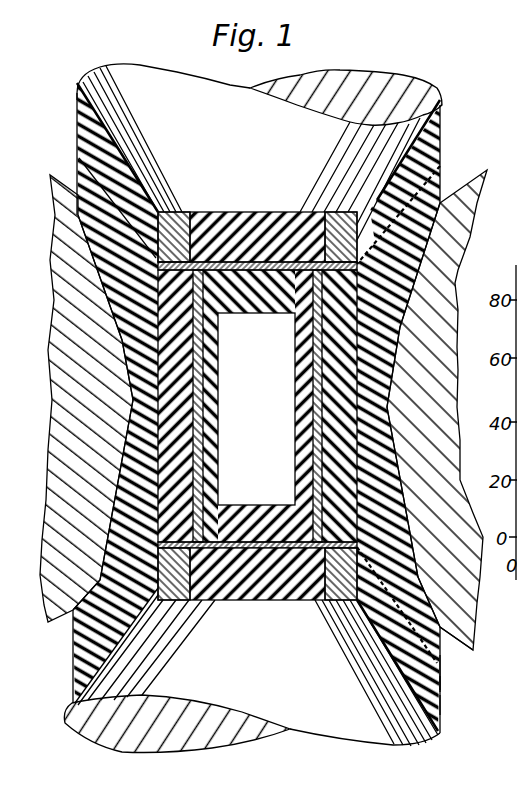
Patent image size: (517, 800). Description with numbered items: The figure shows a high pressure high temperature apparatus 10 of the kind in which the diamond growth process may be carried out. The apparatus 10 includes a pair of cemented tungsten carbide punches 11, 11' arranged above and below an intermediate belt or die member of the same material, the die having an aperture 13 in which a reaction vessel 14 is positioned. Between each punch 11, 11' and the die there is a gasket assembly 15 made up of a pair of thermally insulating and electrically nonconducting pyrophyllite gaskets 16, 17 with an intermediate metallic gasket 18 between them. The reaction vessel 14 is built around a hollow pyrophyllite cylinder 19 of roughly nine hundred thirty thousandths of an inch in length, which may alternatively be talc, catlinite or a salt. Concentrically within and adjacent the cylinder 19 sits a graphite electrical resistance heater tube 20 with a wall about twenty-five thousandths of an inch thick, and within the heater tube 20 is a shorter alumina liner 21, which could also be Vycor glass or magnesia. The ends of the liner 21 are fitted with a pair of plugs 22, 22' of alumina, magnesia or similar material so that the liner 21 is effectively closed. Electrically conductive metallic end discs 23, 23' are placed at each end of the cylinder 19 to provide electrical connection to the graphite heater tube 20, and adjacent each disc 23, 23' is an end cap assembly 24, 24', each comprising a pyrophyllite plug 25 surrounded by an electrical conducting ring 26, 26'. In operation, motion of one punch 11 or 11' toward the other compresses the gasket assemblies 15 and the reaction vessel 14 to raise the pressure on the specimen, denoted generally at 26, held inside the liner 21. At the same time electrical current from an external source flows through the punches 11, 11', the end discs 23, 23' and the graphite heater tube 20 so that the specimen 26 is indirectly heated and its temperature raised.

The apparatus 10 is at (426, 67).
The cemented tungsten carbide punch 11 is at (259, 79).
The cemented tungsten carbide punch 11' is at (252, 733).
The aperture 13 is at (500, 207).
The reaction vessel 14 is at (132, 470).
The gasket assembly 15 is at (452, 693).
The pyrophyllite gasket 16 is at (440, 697).
The pyrophyllite gasket 17 is at (440, 650).
The metallic gasket 18 is at (442, 667).
The hollow pyrophyllite cylinder 19 is at (172, 318).
The graphite electrical resistance heater tube 20 is at (166, 400).
The alumina liner 21 is at (168, 442).
The plug 22 is at (256, 387).
The plug 22' is at (256, 497).
The electrically conductive metallic end disc 23 is at (257, 221).
The electrically conductive metallic end disc 23' is at (257, 587).
The end cap assembly 24 is at (257, 206).
The end cap assembly 24' is at (257, 605).
The pyrophyllite plug 25 is at (305, 200).
The electrical conducting ring 26 is at (257, 279).
The electrical conducting ring 26' is at (257, 603).